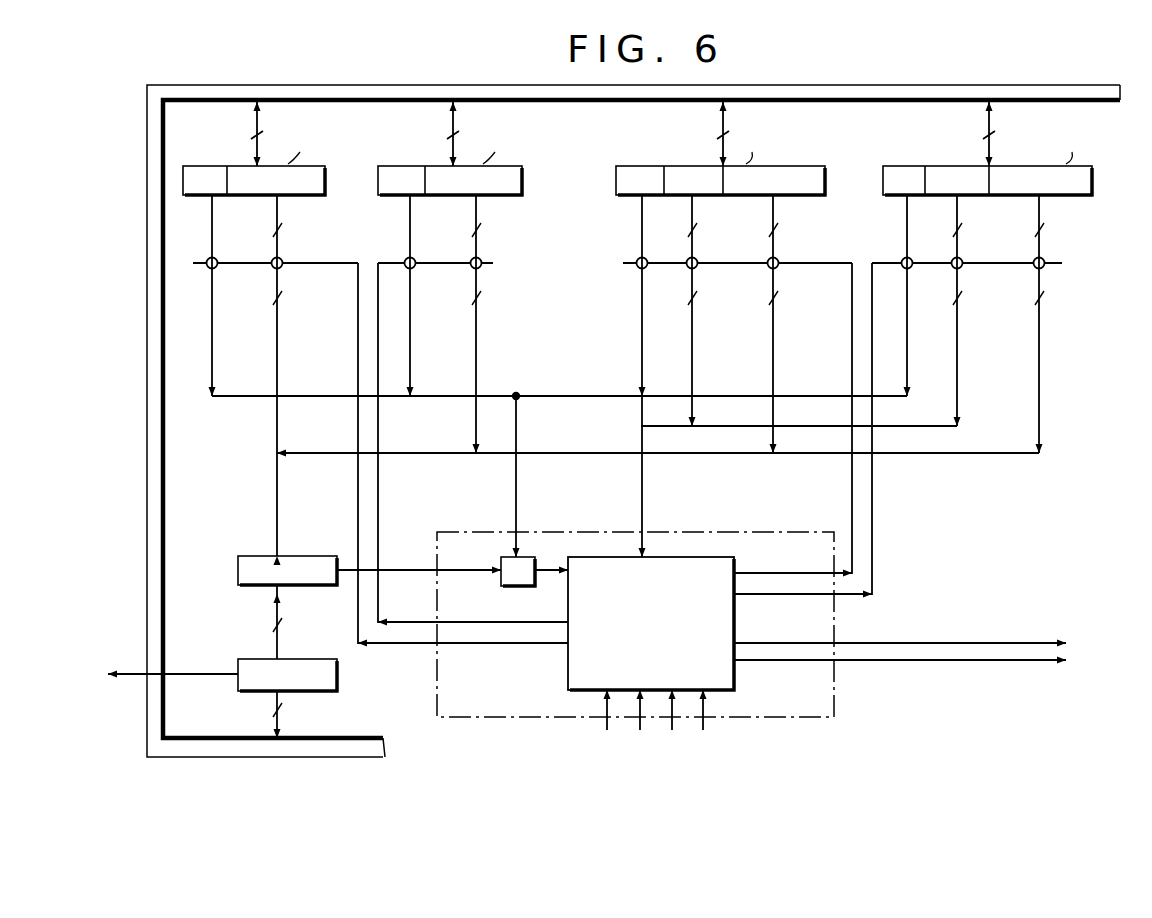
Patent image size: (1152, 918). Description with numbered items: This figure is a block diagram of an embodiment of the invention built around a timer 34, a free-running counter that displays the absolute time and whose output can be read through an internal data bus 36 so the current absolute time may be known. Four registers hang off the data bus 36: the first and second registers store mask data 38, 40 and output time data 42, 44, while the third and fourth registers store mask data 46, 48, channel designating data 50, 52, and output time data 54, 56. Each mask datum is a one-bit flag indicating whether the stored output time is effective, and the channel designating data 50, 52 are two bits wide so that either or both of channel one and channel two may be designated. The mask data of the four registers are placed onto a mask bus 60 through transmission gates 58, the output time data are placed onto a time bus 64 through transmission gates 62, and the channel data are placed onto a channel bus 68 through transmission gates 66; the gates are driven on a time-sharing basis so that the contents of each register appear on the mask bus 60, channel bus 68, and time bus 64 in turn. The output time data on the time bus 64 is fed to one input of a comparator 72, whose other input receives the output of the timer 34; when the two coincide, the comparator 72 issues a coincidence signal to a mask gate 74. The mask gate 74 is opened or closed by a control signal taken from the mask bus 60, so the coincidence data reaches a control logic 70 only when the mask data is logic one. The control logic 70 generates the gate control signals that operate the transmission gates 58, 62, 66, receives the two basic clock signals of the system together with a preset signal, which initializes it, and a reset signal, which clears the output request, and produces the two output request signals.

The timer 34 is at (338, 676).
The internal data bus 36 is at (153, 482).
The mask data 38 is at (220, 167).
The mask data 40 is at (416, 167).
The output time data 42 is at (326, 180).
The output time data 44 is at (523, 180).
The mask data 46 is at (650, 167).
The mask data 48 is at (915, 167).
The channel designating data 50 is at (698, 167).
The channel designating data 52 is at (958, 167).
The output time data 54 is at (794, 167).
The output time data 56 is at (1038, 167).
The transmission gates 58 is at (205, 262).
The mask bus 60 is at (544, 398).
The transmission gates 62 is at (282, 268).
The time bus 64 is at (554, 454).
The transmission gates 66 is at (697, 268).
The channel bus 68 is at (636, 442).
The control logic 70 is at (568, 676).
The comparator 72 is at (254, 556).
The mask gate 74 is at (508, 586).